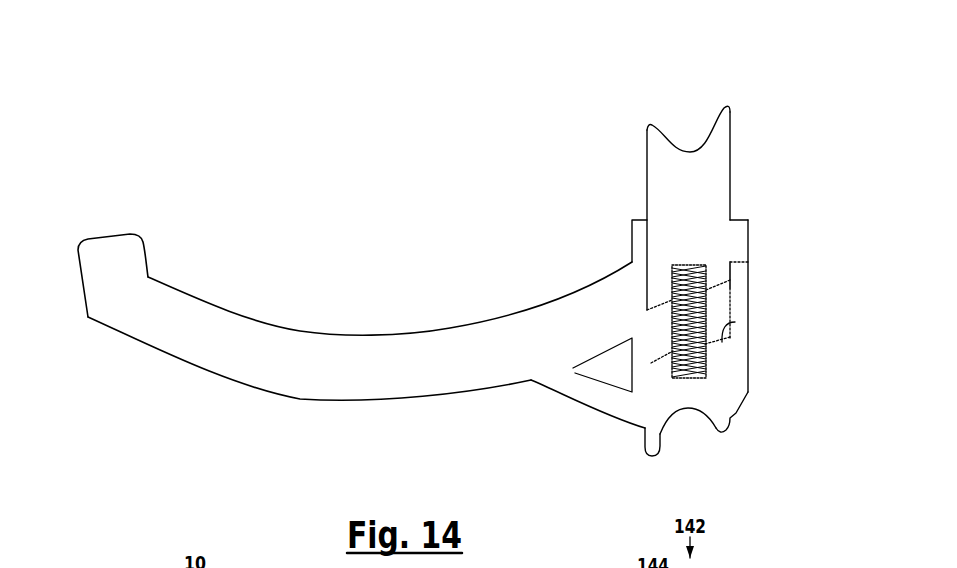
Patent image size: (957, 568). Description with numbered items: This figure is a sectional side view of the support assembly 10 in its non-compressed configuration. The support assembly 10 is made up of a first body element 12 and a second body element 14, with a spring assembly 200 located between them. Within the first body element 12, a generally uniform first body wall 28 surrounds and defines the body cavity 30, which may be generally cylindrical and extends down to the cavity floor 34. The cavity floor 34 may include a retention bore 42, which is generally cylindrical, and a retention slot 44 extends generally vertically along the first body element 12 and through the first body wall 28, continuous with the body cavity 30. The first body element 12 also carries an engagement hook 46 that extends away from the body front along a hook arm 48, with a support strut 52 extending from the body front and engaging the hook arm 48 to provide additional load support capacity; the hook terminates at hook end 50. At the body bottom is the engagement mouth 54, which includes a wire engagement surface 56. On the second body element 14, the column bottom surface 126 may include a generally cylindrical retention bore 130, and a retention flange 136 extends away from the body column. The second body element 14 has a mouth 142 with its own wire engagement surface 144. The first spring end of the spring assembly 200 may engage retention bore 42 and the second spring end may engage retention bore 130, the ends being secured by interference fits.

The support assembly 10 is at (396, 104).
The first body element 12 is at (113, 399).
The second body element 14 is at (596, 180).
The first body wall 28 is at (637, 239).
The body cavity 30 is at (662, 332).
The cavity floor 34 is at (735, 322).
The retention bore 42 is at (697, 363).
The retention slot 44 is at (737, 291).
The engagement hook 46 is at (365, 300).
The hook arm 48 is at (345, 378).
The end hook 50 is at (107, 236).
The support strut 52 is at (567, 388).
The engagement mouth 54 is at (692, 452).
The wire engagement surface 56 is at (688, 408).
The column bottom surface 126 is at (662, 305).
The retention bore 130 is at (672, 282).
The retention flange 136 is at (739, 266).
The mouth 142 is at (688, 78).
The wire engagement surface 144 is at (690, 150).
The spring assembly 200 is at (718, 313).